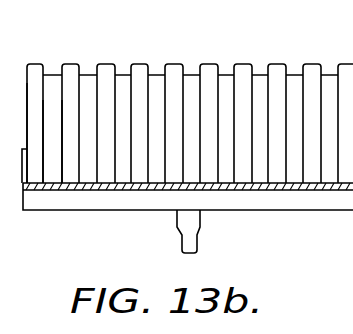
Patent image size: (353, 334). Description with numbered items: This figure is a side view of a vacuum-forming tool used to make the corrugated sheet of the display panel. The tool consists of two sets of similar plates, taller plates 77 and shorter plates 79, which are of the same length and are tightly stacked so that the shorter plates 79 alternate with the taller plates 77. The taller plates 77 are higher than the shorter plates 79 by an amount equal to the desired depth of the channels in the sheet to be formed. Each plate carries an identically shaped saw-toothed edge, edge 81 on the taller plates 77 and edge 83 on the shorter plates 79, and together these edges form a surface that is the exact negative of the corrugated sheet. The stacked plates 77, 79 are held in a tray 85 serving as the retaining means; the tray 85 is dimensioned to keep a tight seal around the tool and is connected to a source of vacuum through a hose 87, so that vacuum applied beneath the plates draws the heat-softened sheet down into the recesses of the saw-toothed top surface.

The taller plate 77 is at (32, 88).
The shorter plate 79 is at (52, 112).
The saw-toothed edge 81 is at (38, 63).
The saw-toothed edge 83 is at (57, 75).
The tray 85 is at (124, 210).
The hose 87 is at (197, 243).